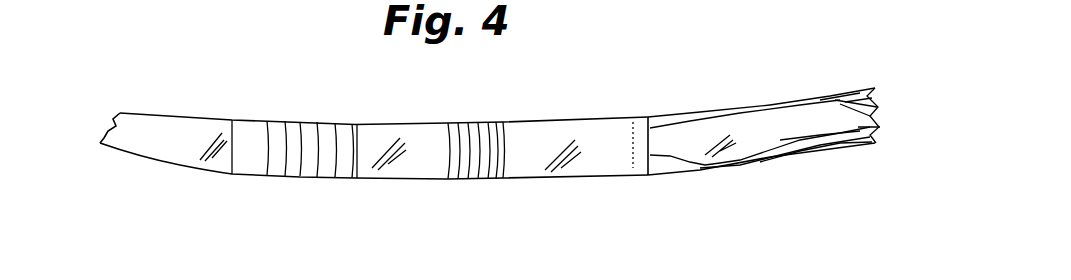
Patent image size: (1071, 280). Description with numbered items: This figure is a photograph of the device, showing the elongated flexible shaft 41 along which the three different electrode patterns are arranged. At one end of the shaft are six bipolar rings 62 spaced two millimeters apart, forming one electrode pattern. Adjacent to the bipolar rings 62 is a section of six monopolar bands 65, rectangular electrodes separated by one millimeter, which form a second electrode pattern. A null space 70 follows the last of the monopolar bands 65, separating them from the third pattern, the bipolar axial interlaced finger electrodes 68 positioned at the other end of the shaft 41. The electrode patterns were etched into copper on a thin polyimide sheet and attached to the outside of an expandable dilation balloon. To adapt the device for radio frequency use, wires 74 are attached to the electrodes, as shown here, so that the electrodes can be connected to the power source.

The elongated flexible shaft 41 is at (494, 184).
The bipolar rings 62 is at (255, 118).
The monopolar bands 65 is at (437, 123).
The bipolar axial interlaced finger electrodes 68 is at (658, 118).
The null space 70 is at (558, 120).
The wires 74 is at (745, 110).